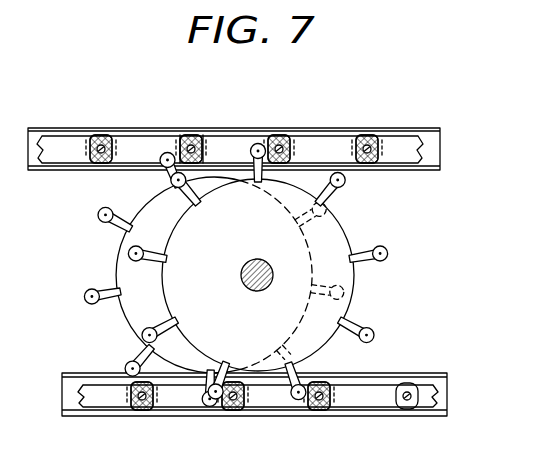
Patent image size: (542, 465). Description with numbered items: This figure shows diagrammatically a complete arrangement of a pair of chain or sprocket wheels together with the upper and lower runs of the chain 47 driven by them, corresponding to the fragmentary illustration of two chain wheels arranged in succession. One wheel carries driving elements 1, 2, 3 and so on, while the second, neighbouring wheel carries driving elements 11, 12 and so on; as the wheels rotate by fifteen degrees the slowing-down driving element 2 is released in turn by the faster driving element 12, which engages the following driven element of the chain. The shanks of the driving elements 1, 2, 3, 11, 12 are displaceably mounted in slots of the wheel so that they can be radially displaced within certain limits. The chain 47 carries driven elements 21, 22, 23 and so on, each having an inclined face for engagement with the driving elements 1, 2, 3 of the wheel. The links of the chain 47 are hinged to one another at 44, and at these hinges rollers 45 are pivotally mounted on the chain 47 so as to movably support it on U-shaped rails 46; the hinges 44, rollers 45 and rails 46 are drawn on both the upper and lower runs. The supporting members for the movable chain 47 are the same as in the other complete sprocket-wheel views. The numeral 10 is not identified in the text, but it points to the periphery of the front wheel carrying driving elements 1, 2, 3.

The driving element 1 is at (345, 187).
The driving element 2 is at (255, 144).
The driving element 3 is at (170, 182).
The front disc 10 is at (335, 208).
The driving element 11 is at (240, 182).
The driving element 12 is at (160, 156).
The driven element 21 is at (366, 137).
The driven element 22 is at (278, 140).
The driven element 23 is at (188, 135).
The hinge 44 is at (105, 137).
The roller 45 is at (182, 137).
The U-shaped rail 46 is at (440, 160).
The chain 47 is at (413, 148).